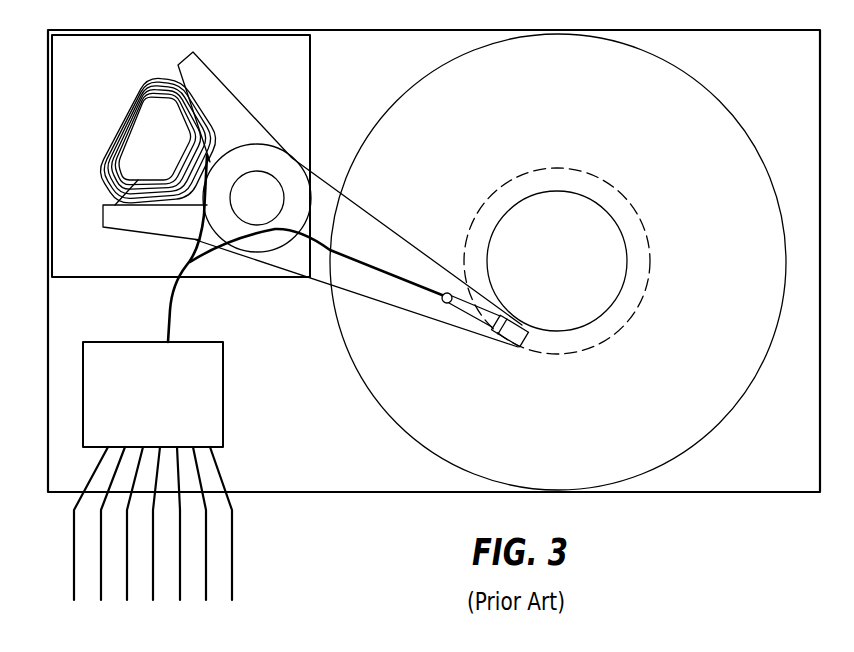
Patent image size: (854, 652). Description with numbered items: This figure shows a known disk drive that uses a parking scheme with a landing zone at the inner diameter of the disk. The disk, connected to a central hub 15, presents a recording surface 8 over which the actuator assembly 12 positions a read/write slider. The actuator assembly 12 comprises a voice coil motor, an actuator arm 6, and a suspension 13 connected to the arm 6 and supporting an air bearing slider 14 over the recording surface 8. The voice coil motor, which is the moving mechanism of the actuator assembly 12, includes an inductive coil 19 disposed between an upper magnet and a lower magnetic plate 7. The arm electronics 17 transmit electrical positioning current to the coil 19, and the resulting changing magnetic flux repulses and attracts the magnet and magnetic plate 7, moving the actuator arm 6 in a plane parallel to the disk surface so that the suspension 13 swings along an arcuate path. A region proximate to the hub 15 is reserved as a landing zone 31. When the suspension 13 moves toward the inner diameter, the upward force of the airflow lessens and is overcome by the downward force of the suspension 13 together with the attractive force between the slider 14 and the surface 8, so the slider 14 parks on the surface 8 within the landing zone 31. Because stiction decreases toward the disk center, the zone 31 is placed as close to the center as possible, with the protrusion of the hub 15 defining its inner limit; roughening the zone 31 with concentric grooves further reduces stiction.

The actuator arm 6 is at (228, 97).
The lower magnetic plate 7 is at (90, 254).
The recording surface 8 is at (560, 114).
The actuator assembly 12 is at (293, 124).
The suspension 13 is at (413, 244).
The air bearing slider 14 is at (504, 336).
The hub 15 is at (600, 243).
The arm electronics 17 is at (223, 400).
The inductive coil 19 is at (120, 113).
The landing zone 31 is at (642, 281).